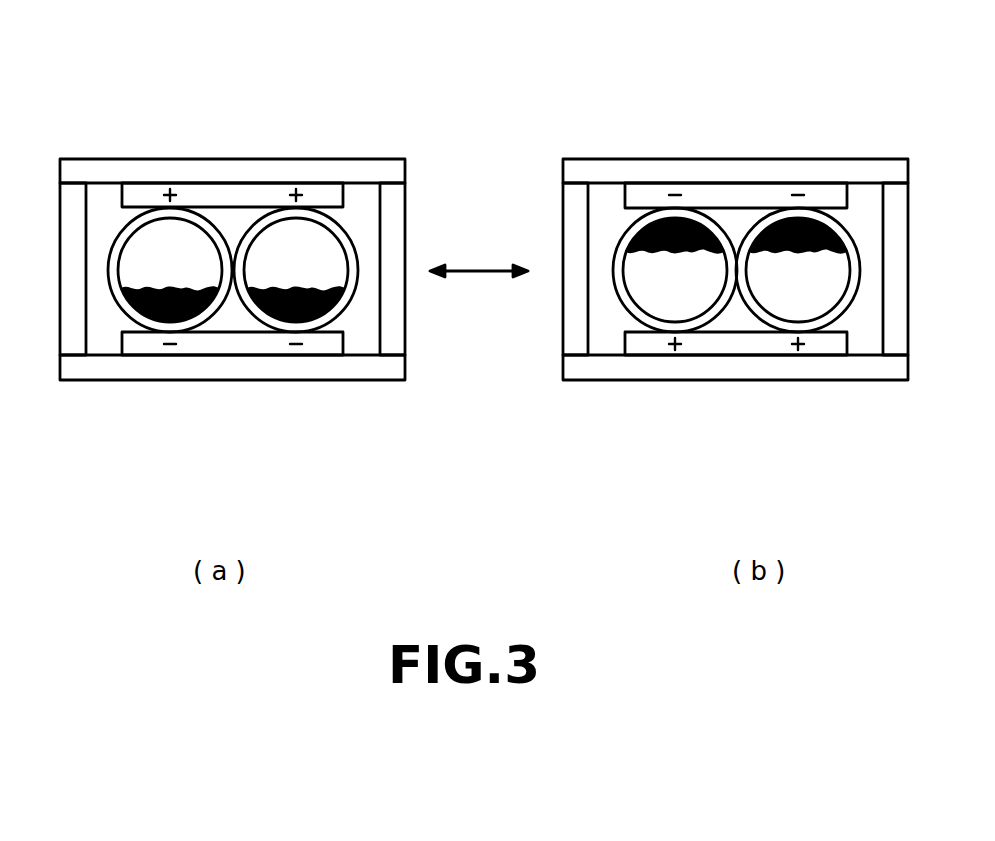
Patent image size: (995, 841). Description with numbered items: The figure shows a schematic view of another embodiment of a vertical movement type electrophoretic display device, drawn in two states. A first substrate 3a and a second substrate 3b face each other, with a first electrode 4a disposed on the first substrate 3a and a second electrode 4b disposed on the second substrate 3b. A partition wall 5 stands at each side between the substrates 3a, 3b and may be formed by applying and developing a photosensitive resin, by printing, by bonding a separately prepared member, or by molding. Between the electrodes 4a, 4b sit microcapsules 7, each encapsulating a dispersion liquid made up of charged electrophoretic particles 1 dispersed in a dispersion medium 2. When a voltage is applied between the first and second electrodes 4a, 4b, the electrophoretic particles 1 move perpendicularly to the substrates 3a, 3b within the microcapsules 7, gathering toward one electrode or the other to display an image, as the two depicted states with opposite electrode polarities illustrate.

The electrophoretic particles 1 is at (152, 313).
The dispersion medium 2 is at (188, 230).
The first substrate 3a is at (385, 168).
The second substrate 3b is at (332, 370).
The first electrode 4a is at (138, 193).
The second electrode 4b is at (220, 342).
The partition wall 5 is at (397, 227).
The microcapsule 7 is at (332, 310).